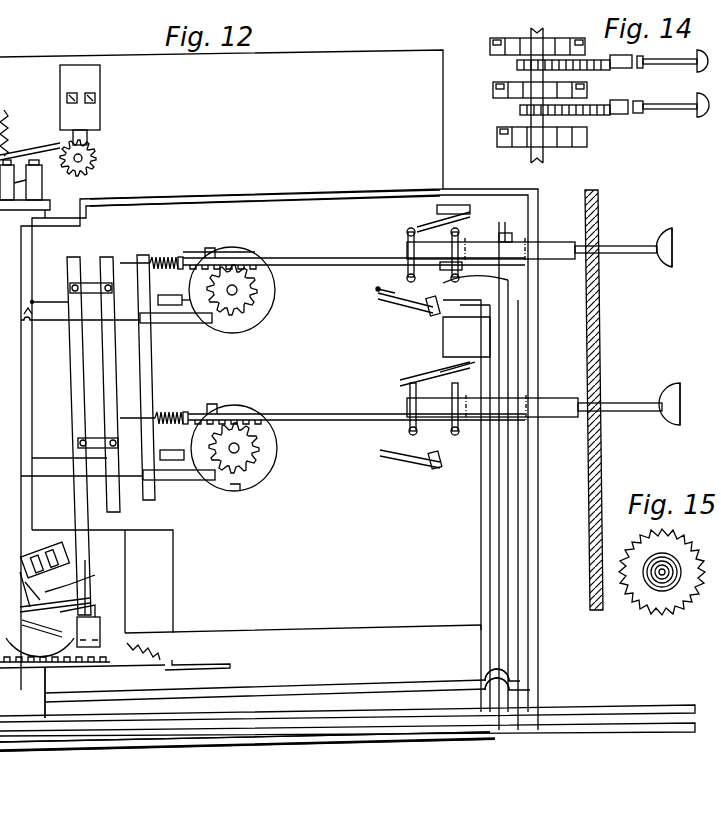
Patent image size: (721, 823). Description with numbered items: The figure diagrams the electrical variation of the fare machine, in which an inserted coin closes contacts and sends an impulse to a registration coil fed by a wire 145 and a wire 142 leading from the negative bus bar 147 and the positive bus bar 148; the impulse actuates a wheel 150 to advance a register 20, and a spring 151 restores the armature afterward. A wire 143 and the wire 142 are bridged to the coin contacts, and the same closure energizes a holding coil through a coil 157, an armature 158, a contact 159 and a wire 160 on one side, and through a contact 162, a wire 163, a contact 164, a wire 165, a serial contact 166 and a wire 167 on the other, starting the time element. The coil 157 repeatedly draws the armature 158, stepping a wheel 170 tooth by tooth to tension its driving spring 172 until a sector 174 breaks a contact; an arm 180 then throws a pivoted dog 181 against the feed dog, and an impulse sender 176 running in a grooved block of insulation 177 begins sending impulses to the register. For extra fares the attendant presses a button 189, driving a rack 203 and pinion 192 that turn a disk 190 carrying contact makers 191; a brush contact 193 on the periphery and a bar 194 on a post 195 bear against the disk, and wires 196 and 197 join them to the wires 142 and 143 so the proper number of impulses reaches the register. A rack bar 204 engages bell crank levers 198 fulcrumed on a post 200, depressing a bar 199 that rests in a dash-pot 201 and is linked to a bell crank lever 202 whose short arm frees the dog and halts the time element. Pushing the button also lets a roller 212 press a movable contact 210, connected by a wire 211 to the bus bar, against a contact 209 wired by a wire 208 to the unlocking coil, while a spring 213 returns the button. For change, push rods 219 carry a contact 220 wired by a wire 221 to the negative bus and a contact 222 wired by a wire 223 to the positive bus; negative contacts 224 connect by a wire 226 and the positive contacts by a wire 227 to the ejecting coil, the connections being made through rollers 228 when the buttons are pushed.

In FIG. 12, the register 20 is at (100, 105).
In FIG. 12, the wheel 150 is at (93, 144).
In FIG. 12, the spring 151 is at (30, 135).
In FIG. 12, the wire 145 is at (211, 198).
In FIG. 12, the wire 142 is at (214, 206).
In FIG. 12, the wire 143 is at (20, 378).
In FIG. 12, the bell crank levers 198 is at (90, 283).
In FIG. 12, the post 200 is at (135, 506).
In FIG. 12, the wire 196 is at (42, 302).
In FIG. 12, the depressible bar 199 is at (80, 480).
In FIG. 12, the wire 197 is at (52, 319).
In FIG. 12, the bar 194 is at (180, 323).
In FIG. 12, the spring 213 is at (158, 258).
In FIG. 12, the brush contact 193 is at (183, 290).
In FIG. 12, the post 195 is at (150, 395).
In FIG. 12, the rack bar 204 is at (306, 262).
In FIG. 12, the rack 203 is at (254, 261).
In FIG. 12, the disk 190 is at (245, 318).
In FIG. 14, the disk 190 is at (531, 114).
In FIG. 12, the pinion 192 is at (268, 288).
In FIG. 12, the contact makers 191 is at (232, 262).
In FIG. 14, the contact makers 191 is at (494, 40).
In FIG. 12, the push rods 219 is at (602, 268).
In FIG. 12, the button 189 is at (662, 232).
In FIG. 14, the button 189 is at (690, 72).
In FIG. 12, the contact 162 is at (420, 220).
In FIG. 12, the contact 220 is at (433, 255).
In FIG. 12, the roller 212 is at (438, 272).
In FIG. 12, the negative contacts 224 is at (494, 220).
In FIG. 12, the rollers 228 is at (490, 200).
In FIG. 12, the movable contact 210 is at (378, 288).
In FIG. 12, the contact 209 is at (398, 298).
In FIG. 12, the wire 163 is at (442, 331).
In FIG. 12, the contact 164 is at (430, 362).
In FIG. 12, the wire 208 is at (490, 480).
In FIG. 12, the contact 222 is at (500, 282).
In FIG. 12, the wire 226 is at (520, 328).
In FIG. 12, the wire 227 is at (508, 358).
In FIG. 12, the wire 165 is at (476, 521).
In FIG. 12, the wire 211 is at (490, 560).
In FIG. 12, the wire 223 is at (512, 686).
In FIG. 12, the wire 221 is at (515, 706).
In FIG. 12, the positive bus bar 148 is at (416, 736).
In FIG. 12, the negative bus bar 147 is at (486, 732).
In FIG. 12, the bell crank lever 202 is at (100, 588).
In FIG. 12, the dash-pot 201 is at (100, 625).
In FIG. 12, the coil 157 is at (50, 556).
In FIG. 12, the armature 158 is at (104, 574).
In FIG. 12, the contact 159 is at (74, 582).
In FIG. 12, the arm 180 is at (73, 592).
In FIG. 12, the sector 174 is at (98, 612).
In FIG. 12, the pivoted dog 181 is at (49, 621).
In FIG. 12, the serial contact 166 is at (40, 648).
In FIG. 12, the wire 167 is at (82, 675).
In FIG. 12, the wire 160 is at (46, 684).
In FIG. 12, the impulse sender 176 is at (137, 667).
In FIG. 12, the block of insulation 177 is at (205, 667).
In FIG. 15, the wheel 170 is at (662, 586).
In FIG. 15, the spring 172 is at (675, 560).